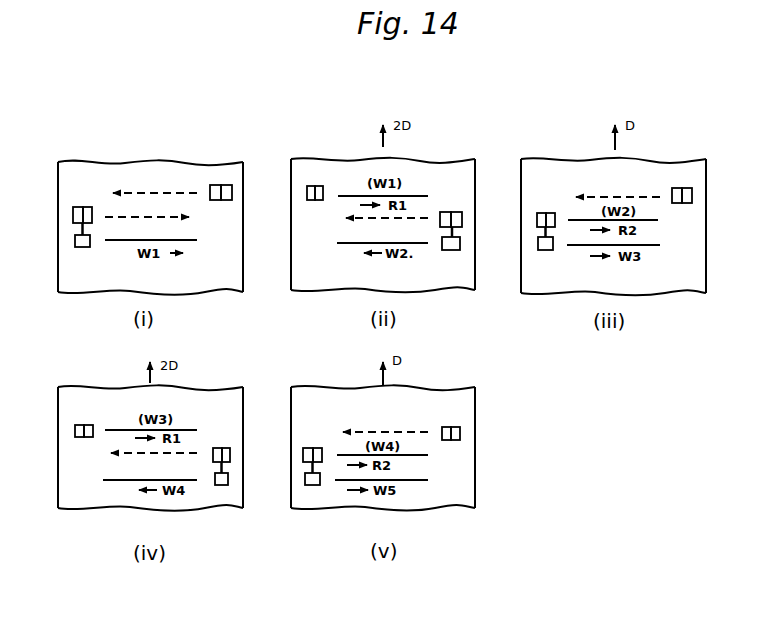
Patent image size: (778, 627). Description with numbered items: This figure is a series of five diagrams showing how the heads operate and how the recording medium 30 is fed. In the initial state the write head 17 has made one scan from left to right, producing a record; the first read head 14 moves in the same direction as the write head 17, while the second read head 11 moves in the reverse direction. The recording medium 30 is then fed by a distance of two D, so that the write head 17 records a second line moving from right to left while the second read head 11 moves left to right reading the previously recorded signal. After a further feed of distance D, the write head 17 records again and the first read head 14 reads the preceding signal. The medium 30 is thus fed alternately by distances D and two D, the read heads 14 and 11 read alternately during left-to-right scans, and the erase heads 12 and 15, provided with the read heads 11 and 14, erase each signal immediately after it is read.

The recording medium 30 is at (223, 161).
The second read head 11 is at (232, 192).
The erase head 12 is at (228, 185).
The first read head 14 is at (87, 206).
The erase head 15 is at (73, 213).
The write head 17 is at (75, 240).